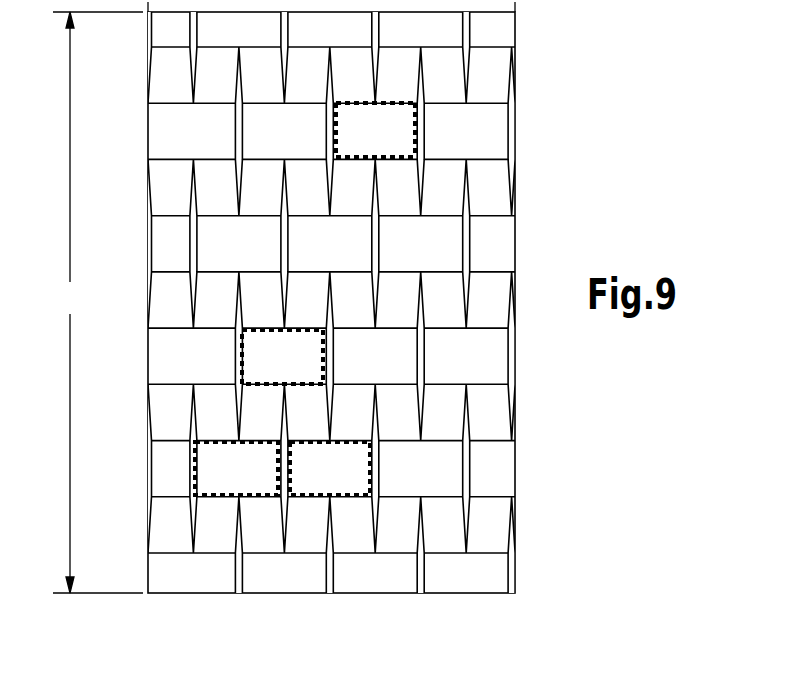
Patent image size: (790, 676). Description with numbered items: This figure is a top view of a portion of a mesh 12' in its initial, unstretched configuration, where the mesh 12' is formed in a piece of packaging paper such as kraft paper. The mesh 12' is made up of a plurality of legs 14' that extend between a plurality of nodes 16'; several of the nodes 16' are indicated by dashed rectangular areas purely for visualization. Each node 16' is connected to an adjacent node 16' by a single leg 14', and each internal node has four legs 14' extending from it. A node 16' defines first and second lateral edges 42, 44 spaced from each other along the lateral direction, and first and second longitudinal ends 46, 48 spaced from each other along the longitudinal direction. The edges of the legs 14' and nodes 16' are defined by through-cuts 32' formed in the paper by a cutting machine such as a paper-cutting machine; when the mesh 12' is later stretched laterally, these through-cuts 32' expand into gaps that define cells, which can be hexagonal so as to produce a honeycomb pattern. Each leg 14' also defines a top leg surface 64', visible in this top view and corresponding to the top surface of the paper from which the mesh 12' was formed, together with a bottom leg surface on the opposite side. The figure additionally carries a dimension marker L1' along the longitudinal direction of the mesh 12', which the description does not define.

The mesh 12' is at (392, 297).
The leg 14' is at (307, 332).
The node 16' is at (331, 351).
The through-cut 32' is at (228, 436).
The first lateral edge 42 is at (337, 131).
The second lateral edge 44 is at (415, 128).
The first longitudinal end 46 is at (392, 102).
The second longitudinal end 48 is at (390, 160).
The top leg surface 64' is at (554, 356).
The fabric length L1' is at (98, 302).